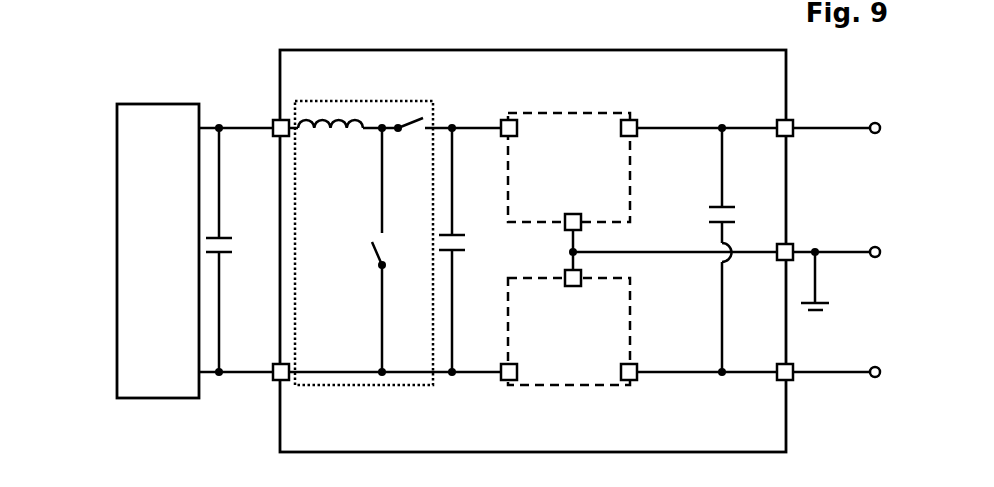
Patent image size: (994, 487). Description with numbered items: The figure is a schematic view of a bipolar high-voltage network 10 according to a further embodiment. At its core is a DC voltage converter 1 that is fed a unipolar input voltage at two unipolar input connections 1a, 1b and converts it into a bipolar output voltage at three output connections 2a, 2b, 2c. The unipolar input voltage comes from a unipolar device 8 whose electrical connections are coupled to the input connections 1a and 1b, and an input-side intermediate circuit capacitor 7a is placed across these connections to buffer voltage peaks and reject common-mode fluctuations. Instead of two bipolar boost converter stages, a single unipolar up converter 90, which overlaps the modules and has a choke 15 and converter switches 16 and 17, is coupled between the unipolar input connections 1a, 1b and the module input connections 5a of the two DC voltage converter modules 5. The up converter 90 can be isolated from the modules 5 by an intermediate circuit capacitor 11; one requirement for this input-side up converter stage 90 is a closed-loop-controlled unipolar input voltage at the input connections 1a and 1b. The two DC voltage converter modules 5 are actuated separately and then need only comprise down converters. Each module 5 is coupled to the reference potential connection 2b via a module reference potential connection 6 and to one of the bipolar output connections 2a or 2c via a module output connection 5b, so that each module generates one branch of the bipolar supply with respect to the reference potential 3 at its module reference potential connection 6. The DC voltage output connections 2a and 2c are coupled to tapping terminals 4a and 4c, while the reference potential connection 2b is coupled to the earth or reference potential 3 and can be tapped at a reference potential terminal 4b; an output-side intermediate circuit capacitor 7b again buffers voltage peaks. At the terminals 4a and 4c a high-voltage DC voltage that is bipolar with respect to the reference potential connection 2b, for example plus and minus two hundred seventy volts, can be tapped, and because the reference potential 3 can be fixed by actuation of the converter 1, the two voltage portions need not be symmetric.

The DC voltage converter 1 is at (668, 50).
The unipolar input connection 1a is at (273, 124).
The unipolar input connection 1b is at (273, 380).
The DC voltage output connection 2a is at (793, 136).
The reference potential connection 2b is at (793, 244).
The DC voltage output connection 2c is at (793, 380).
The reference potential 3 is at (821, 313).
The tapping terminal 4a is at (880, 132).
The reference potential terminal 4b is at (880, 256).
The tapping terminal 4c is at (880, 376).
The DC voltage converter module 5 is at (555, 113).
The module input connection 5a is at (501, 137).
The module output connection 5b is at (637, 137).
The module reference potential connection 6 is at (582, 228).
The intermediate circuit capacitor 7a is at (232, 238).
The intermediate circuit capacitor 7b is at (726, 207).
The unipolar device 8 is at (117, 312).
The bipolar high-voltage network 10 is at (108, 86).
The intermediate circuit capacitor 11 is at (460, 255).
The choke 15 is at (324, 128).
The converter switch 16 is at (415, 130).
The converter switch 17 is at (372, 249).
The unipolar up converter 90 is at (401, 387).